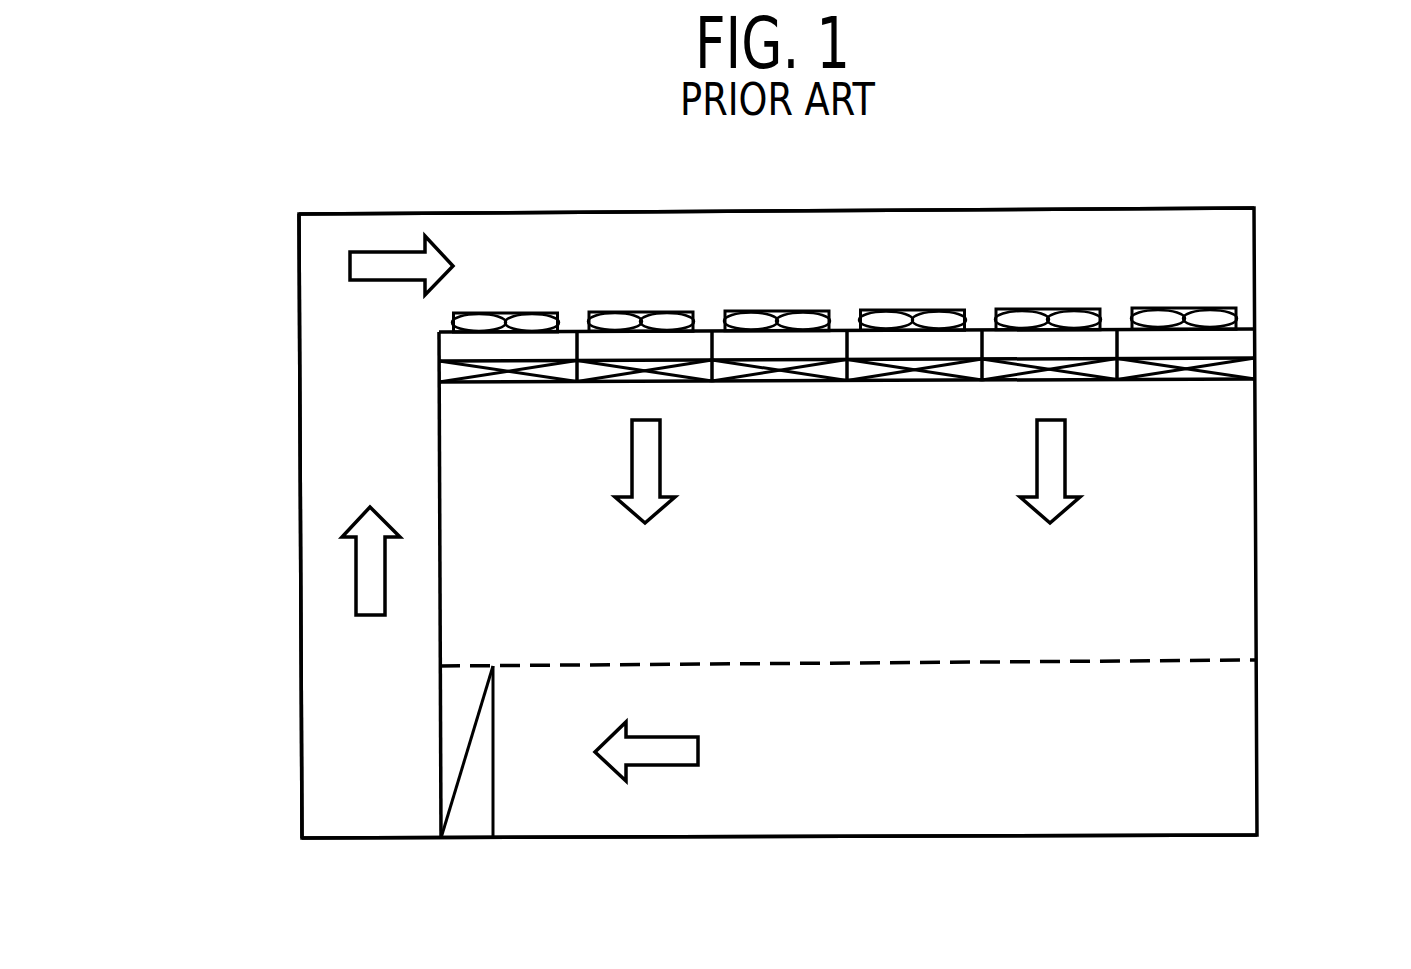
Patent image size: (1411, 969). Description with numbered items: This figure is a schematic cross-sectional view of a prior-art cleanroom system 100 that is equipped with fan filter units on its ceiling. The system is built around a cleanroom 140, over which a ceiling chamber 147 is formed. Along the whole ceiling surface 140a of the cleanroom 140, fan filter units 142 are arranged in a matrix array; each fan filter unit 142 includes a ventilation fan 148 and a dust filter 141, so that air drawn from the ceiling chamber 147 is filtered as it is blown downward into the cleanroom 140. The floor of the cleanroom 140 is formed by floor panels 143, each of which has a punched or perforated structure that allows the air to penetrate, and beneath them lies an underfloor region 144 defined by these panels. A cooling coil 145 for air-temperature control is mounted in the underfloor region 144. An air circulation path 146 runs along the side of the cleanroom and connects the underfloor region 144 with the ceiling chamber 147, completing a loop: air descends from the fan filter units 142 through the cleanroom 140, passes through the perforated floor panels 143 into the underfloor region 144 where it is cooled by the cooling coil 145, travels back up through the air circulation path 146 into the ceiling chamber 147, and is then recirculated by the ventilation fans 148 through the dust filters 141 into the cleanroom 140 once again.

The cleanroom system 100 is at (1265, 175).
The cleanroom 140 is at (1243, 525).
The ceiling surface 140a is at (1207, 380).
The dust filter 141 is at (515, 378).
The fan filter unit 142 is at (507, 310).
The floor panel 143 is at (1190, 660).
The underfloor region 144 is at (860, 825).
The cooling coil 145 is at (466, 825).
The air circulation path 146 is at (315, 433).
The ceiling chamber 147 is at (963, 225).
The ventilation fan 148 is at (535, 313).